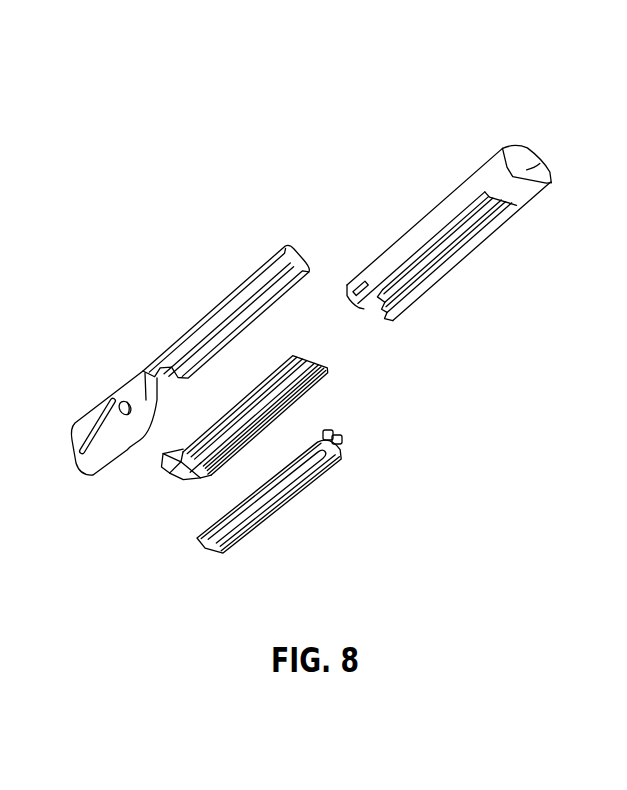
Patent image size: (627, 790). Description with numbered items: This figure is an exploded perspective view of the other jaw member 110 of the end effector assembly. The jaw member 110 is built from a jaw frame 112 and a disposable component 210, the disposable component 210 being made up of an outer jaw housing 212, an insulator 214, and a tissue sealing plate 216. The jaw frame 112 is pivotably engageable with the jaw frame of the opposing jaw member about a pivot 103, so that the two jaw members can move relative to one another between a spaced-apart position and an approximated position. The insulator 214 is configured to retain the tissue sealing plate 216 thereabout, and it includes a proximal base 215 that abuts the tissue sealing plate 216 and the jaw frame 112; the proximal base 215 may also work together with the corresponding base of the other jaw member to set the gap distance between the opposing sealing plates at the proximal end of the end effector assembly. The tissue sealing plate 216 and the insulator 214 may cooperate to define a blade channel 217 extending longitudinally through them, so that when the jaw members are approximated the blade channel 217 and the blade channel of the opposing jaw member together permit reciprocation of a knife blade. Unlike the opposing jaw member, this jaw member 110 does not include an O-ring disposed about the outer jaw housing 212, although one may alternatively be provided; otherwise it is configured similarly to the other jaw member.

The jaw member 110 is at (360, 94).
The jaw frame 112 is at (228, 303).
The pivot 103 is at (127, 402).
The disposable component 210 is at (450, 295).
The outer jaw housing 212 is at (546, 168).
The insulator 214 is at (220, 437).
The proximal base 215 is at (177, 478).
The tissue sealing plate 216 is at (247, 537).
The blade channel 217 is at (292, 486).